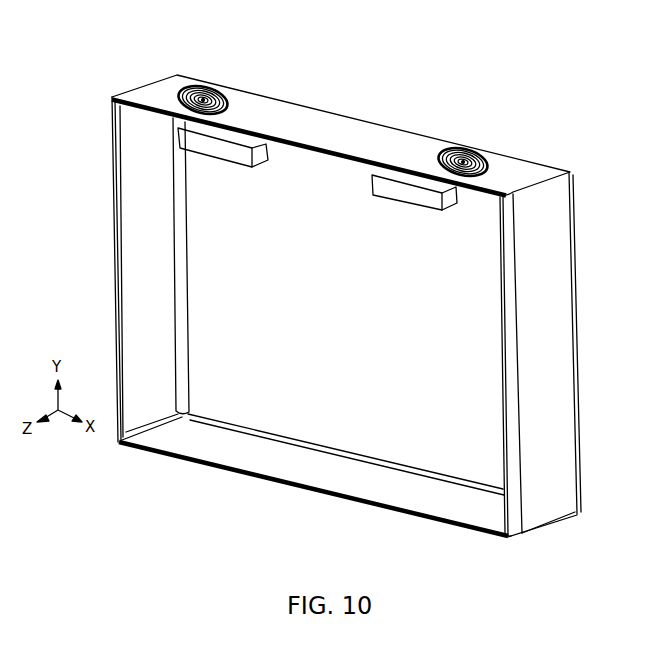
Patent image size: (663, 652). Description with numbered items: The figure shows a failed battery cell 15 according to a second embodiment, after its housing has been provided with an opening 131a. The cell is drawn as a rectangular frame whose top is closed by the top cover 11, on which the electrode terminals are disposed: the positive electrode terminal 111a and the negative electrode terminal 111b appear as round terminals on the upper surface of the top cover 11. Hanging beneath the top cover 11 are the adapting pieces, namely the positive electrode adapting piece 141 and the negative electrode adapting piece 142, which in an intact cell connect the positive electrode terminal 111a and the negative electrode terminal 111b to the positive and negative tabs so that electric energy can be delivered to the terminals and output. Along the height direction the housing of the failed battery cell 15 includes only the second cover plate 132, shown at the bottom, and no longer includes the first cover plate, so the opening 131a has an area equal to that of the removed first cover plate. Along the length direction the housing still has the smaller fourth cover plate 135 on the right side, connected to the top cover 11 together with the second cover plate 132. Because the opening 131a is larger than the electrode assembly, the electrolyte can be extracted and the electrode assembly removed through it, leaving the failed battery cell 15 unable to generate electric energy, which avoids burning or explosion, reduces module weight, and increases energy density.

The failed battery cell 15 is at (95, 65).
The top cover 11 is at (332, 115).
The positive electrode terminal 111a is at (207, 93).
The negative electrode terminal 111b is at (476, 152).
The positive electrode adapting piece 141 is at (242, 155).
The negative electrode adapting piece 142 is at (412, 190).
The opening 131a is at (487, 325).
The second cover plate 132 is at (477, 472).
The fourth cover plate 135 is at (553, 513).